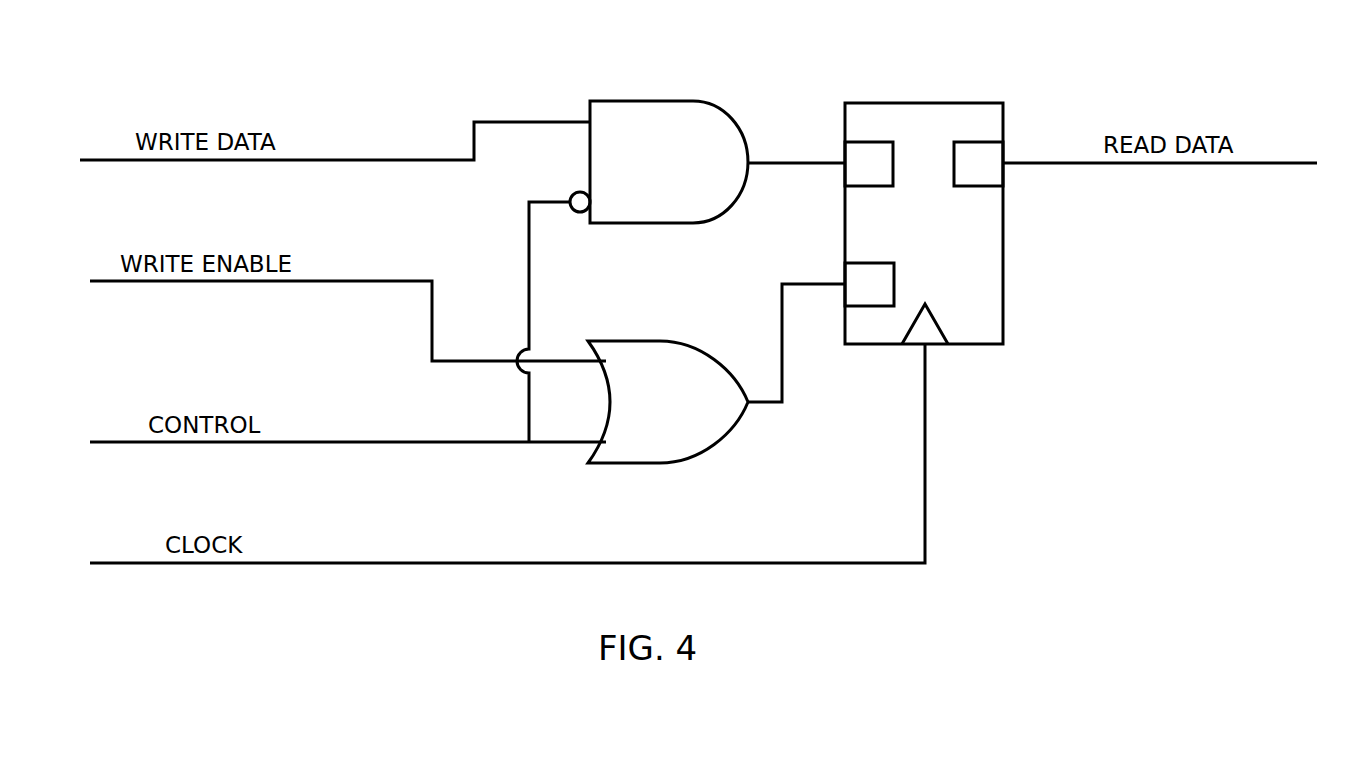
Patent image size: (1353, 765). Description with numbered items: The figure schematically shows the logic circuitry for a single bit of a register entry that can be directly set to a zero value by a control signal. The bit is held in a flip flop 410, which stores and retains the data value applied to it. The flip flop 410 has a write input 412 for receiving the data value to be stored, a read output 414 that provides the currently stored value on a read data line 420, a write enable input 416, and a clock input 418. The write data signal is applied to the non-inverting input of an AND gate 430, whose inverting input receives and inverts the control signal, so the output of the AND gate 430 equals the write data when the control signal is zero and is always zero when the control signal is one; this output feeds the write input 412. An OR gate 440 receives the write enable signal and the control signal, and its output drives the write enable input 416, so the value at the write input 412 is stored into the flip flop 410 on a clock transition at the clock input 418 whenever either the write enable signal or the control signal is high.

The flip flop 410 is at (1003, 295).
The write input 412 is at (868, 142).
The read output 414 is at (977, 142).
The write enable input 416 is at (870, 263).
The clock input 418 is at (932, 344).
The read data line 420 is at (1216, 165).
The AND gate 430 is at (653, 101).
The OR gate 440 is at (660, 341).